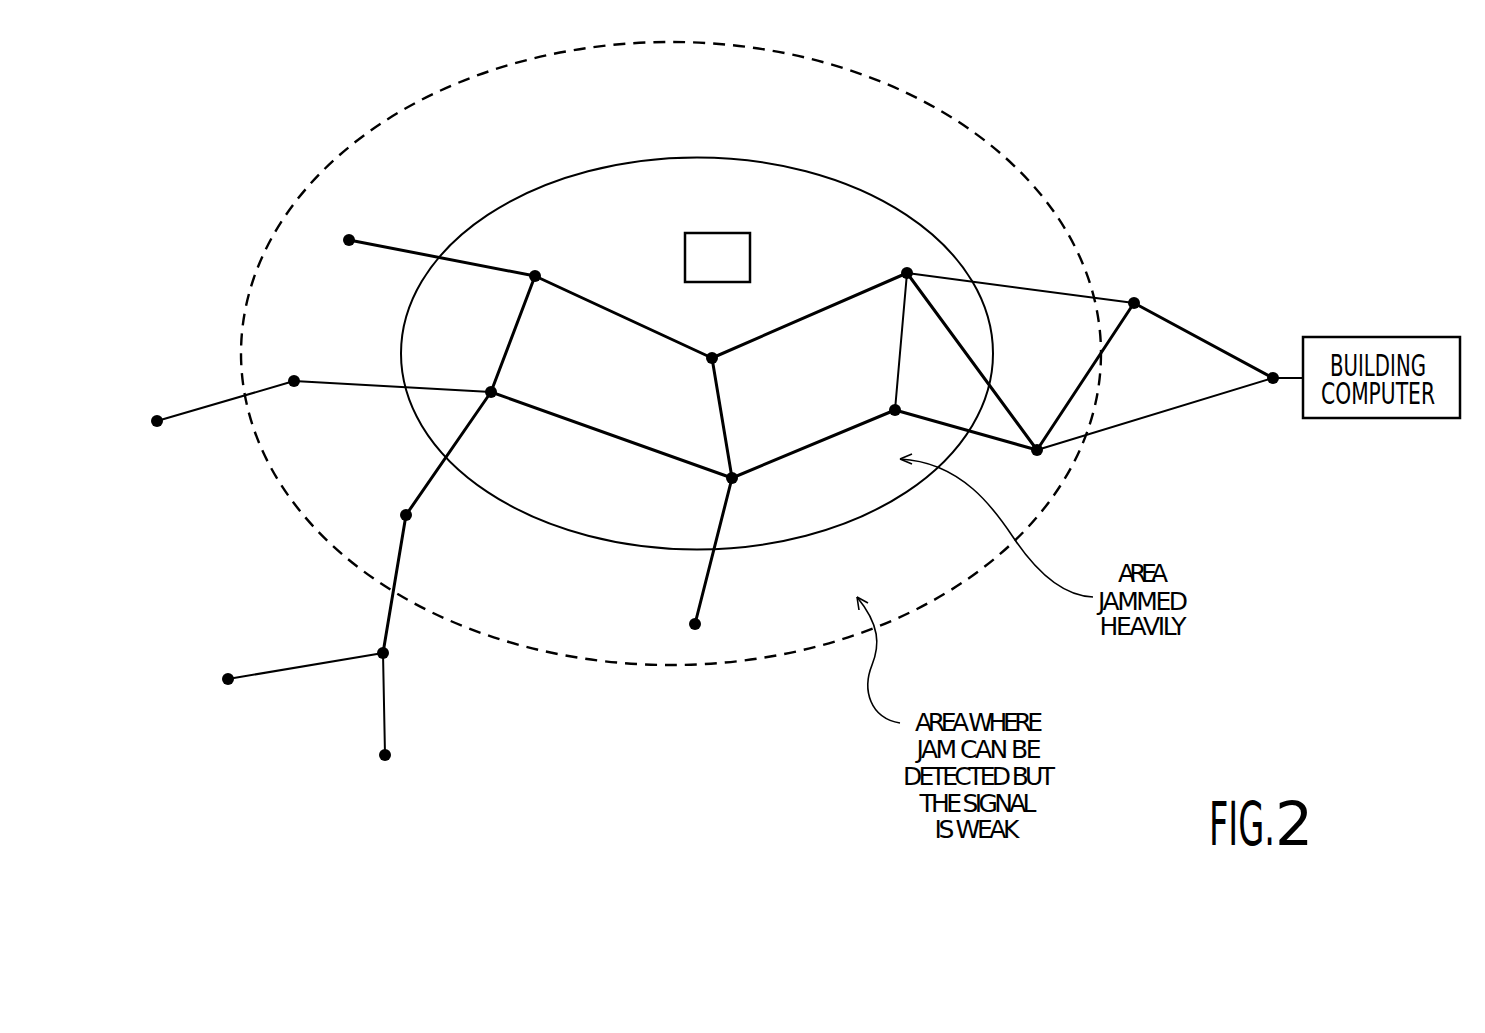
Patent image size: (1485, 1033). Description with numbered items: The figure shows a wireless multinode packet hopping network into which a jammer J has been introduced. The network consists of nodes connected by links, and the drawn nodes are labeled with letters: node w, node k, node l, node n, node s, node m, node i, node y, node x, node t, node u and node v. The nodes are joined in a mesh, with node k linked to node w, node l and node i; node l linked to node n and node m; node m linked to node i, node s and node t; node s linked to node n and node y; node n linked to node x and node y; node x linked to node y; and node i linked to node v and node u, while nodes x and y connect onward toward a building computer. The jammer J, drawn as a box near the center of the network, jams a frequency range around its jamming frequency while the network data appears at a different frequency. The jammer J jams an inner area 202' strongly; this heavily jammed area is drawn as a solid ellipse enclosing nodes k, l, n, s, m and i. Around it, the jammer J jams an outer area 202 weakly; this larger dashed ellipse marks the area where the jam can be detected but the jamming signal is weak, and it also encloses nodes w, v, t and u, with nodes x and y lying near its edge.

The outer area 202 is at (671, 387).
The jammed area 202' is at (697, 371).
The node w is at (341, 227).
The node k is at (541, 263).
The node l is at (712, 344).
The node n is at (904, 261).
The node s is at (887, 404).
The node m is at (743, 488).
The node i is at (499, 387).
The node y is at (1038, 464).
The node x is at (1136, 290).
The node t is at (702, 630).
The node u is at (414, 520).
The node v is at (289, 369).
The jammer J is at (717, 257).